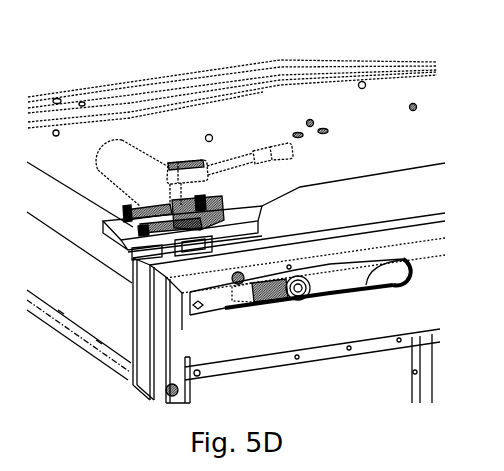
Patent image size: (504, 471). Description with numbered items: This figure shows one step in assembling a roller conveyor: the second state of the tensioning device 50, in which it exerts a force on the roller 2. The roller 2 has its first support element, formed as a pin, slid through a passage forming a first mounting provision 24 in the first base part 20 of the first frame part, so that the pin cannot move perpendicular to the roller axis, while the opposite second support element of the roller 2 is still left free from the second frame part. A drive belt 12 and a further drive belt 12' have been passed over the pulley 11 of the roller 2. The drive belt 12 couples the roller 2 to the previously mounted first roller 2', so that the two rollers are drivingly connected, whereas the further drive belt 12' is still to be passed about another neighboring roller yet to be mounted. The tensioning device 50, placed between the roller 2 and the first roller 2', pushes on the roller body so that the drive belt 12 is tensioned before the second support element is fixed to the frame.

The roller 2 is at (165, 143).
The first roller 2' is at (228, 271).
The first base part 20 is at (152, 118).
The first mounting provision 24 is at (199, 116).
The tensioning device 50 is at (238, 140).
The pulley 11 is at (302, 290).
The drive belt 12 is at (300, 310).
The further drive belt 12' is at (395, 298).